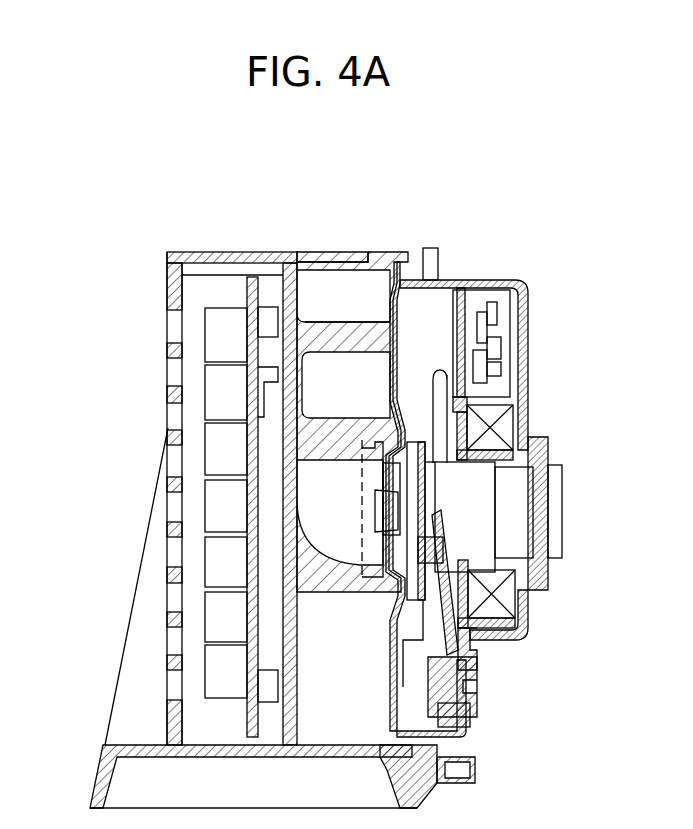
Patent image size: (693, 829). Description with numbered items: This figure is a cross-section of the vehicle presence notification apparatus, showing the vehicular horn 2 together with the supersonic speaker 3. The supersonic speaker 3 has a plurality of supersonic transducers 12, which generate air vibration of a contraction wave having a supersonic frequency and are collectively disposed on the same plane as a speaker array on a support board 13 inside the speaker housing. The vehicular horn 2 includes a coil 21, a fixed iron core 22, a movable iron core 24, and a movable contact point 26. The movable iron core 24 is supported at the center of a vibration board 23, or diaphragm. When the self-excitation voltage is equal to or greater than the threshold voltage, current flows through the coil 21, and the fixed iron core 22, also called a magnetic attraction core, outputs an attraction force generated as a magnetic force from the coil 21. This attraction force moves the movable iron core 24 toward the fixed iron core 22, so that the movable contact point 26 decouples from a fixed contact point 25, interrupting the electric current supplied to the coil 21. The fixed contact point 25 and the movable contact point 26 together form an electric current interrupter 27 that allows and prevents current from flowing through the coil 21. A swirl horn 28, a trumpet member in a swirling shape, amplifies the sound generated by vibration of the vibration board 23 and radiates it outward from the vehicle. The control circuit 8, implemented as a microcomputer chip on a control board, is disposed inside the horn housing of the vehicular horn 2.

The vehicular horn 2 is at (316, 234).
The supersonic speaker 3 is at (285, 235).
The control circuit 8 is at (508, 280).
The supersonic transducers 12 is at (218, 440).
The support board 13 is at (250, 505).
The coil 21 is at (502, 422).
The fixed iron core 22 is at (522, 497).
The vibration board 23 is at (400, 378).
The movable iron core 24 is at (480, 527).
The fixed contact point 25 is at (462, 614).
The movable contact point 26 is at (492, 572).
The electric current interrupter 27 is at (598, 620).
The swirl horn 28 is at (345, 285).